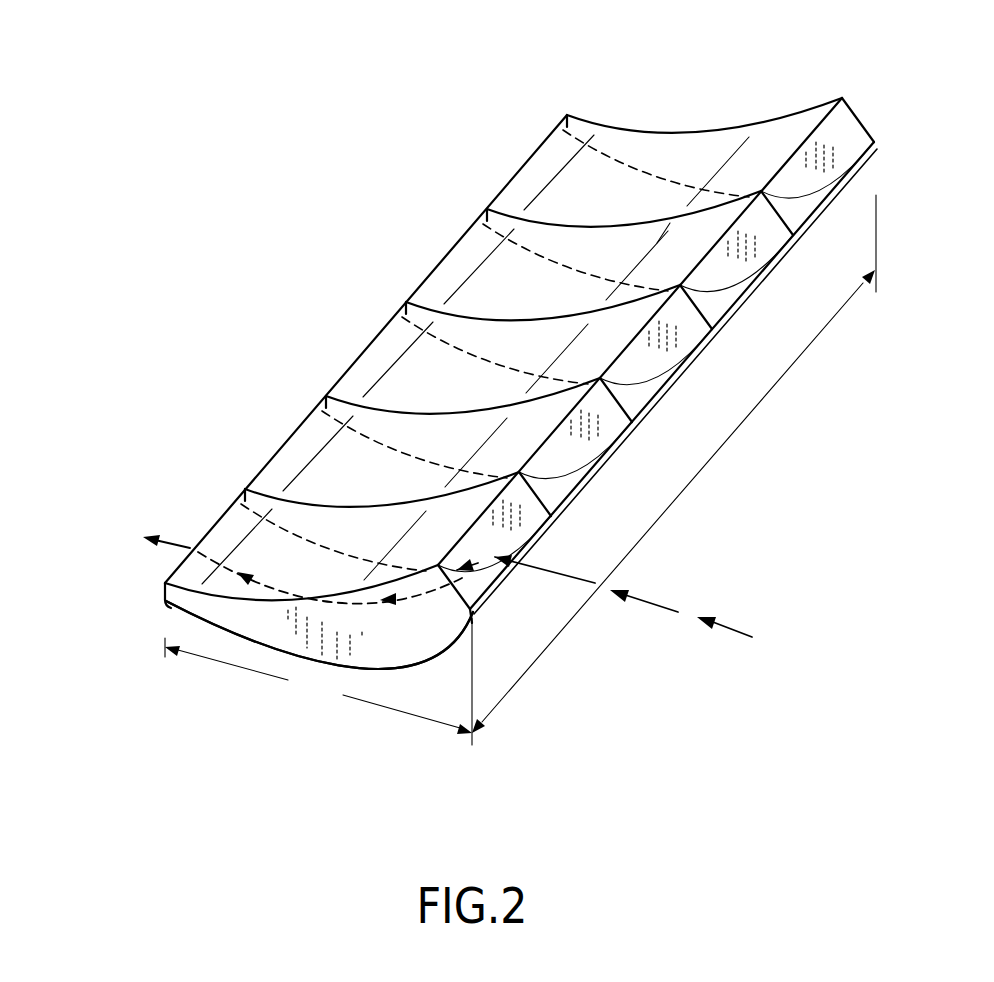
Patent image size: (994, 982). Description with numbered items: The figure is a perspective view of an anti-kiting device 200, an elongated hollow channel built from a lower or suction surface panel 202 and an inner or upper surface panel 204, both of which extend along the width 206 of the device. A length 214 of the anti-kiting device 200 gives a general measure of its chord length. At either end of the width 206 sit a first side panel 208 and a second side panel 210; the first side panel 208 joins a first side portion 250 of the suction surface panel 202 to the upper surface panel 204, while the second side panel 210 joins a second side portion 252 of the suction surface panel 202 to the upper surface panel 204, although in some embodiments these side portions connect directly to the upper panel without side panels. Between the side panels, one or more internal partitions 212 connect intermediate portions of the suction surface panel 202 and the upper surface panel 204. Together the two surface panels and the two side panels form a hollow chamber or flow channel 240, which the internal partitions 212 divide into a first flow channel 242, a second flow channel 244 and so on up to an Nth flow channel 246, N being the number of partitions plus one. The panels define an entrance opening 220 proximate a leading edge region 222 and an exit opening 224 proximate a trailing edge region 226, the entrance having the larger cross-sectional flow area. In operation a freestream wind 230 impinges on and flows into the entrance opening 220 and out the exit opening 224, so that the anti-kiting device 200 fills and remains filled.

The anti-kiting device 200 is at (197, 432).
The lower or suction surface panel 202 is at (683, 187).
The inner or upper surface panel 204 is at (720, 130).
The width 206 is at (674, 470).
The first side panel 208 is at (405, 638).
The second side panel 210 is at (857, 100).
The internal partitions 212 is at (557, 222).
The length 214 is at (318, 686).
The entrance opening 220 is at (612, 445).
The leading edge region 222 is at (608, 503).
The exit opening 224 is at (214, 536).
The trailing edge region 226 is at (140, 562).
The freestream wind 230 is at (722, 628).
The hollow chamber or flow channel 240 is at (660, 305).
The first flow channel 242 is at (860, 155).
The second flow channel 244 is at (758, 265).
The Nth flow channel 246 is at (485, 600).
The first side portion 250 is at (350, 668).
The second side portion 252 is at (620, 165).